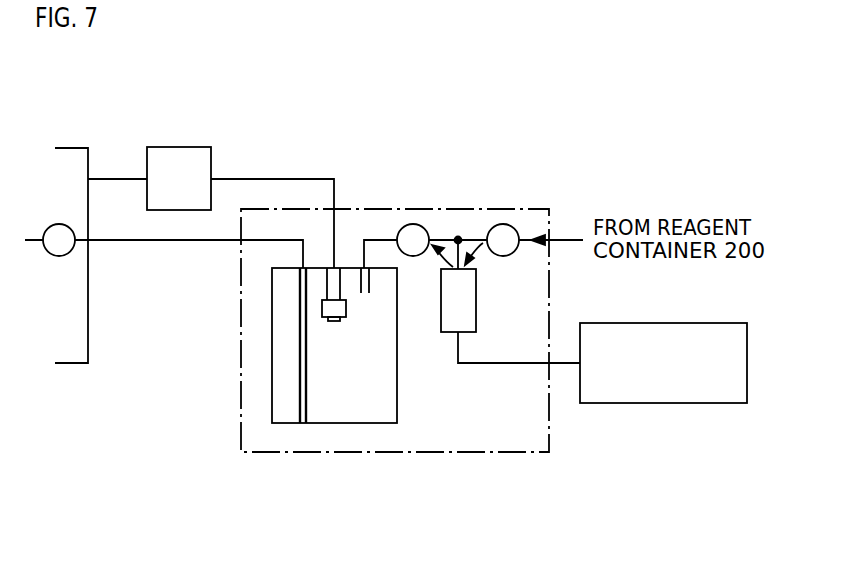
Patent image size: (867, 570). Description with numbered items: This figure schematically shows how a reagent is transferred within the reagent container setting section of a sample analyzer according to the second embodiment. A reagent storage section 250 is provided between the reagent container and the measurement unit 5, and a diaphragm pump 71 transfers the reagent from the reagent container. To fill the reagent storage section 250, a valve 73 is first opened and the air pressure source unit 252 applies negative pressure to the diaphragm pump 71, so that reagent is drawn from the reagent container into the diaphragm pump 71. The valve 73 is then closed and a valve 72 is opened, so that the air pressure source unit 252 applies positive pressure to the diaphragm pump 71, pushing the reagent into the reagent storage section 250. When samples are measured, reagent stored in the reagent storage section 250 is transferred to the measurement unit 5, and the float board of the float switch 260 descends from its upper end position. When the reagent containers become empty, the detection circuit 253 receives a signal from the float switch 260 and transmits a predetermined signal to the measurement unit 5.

The measurement unit 5 is at (71, 154).
The detection circuit 253 is at (211, 158).
The reagent storage section 250 is at (357, 415).
The float switch 260 is at (338, 275).
The valve 72 is at (415, 227).
The valve 73 is at (507, 223).
The diaphragm pump 71 is at (476, 300).
The air pressure source unit 252 is at (668, 404).